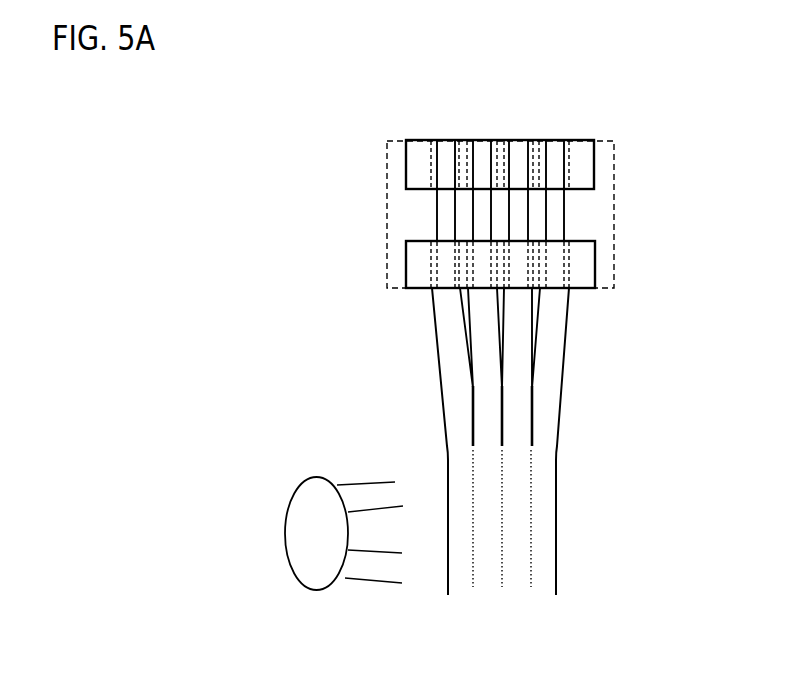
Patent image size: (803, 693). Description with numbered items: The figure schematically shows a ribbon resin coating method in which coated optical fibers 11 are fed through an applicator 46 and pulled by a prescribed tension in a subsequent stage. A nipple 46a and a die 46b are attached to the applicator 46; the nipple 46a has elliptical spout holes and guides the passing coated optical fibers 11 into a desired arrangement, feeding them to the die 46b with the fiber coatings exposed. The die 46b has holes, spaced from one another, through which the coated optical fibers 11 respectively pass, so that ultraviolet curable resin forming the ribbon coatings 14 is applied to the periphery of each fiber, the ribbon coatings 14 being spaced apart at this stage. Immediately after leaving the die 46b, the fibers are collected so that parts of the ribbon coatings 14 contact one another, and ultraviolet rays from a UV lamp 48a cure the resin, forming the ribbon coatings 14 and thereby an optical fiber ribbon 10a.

The optical fiber ribbon 10a is at (568, 522).
The coated optical fibers 11 is at (444, 228).
The ribbon coatings 14 is at (455, 327).
The applicator 46 is at (616, 141).
The nipple 46a is at (578, 144).
The die 46b is at (587, 267).
The UV lamp 48a is at (287, 513).